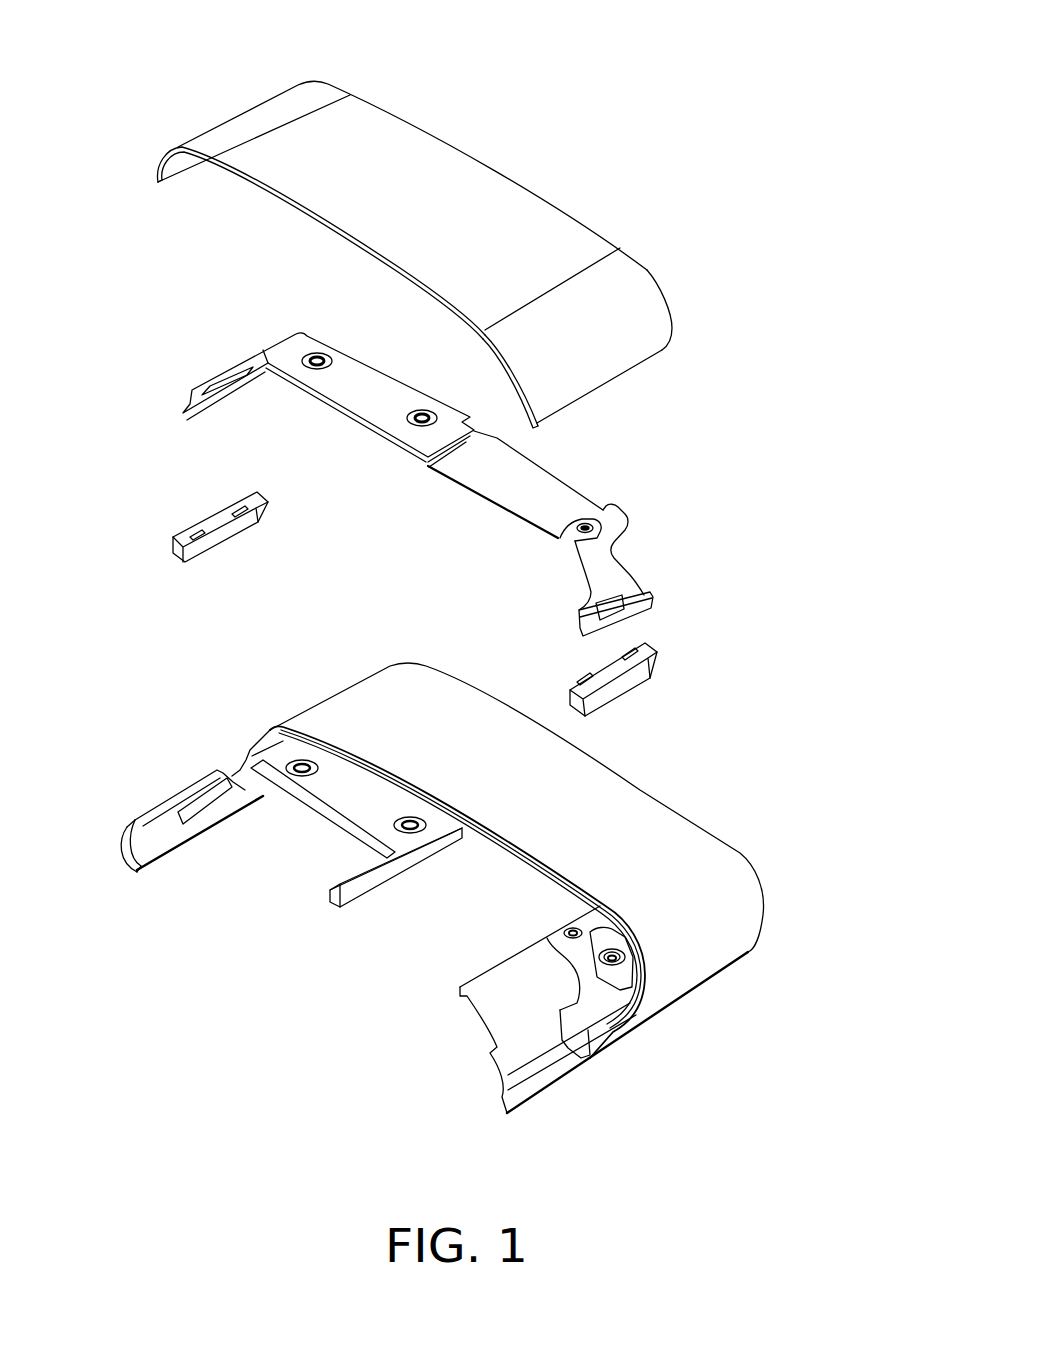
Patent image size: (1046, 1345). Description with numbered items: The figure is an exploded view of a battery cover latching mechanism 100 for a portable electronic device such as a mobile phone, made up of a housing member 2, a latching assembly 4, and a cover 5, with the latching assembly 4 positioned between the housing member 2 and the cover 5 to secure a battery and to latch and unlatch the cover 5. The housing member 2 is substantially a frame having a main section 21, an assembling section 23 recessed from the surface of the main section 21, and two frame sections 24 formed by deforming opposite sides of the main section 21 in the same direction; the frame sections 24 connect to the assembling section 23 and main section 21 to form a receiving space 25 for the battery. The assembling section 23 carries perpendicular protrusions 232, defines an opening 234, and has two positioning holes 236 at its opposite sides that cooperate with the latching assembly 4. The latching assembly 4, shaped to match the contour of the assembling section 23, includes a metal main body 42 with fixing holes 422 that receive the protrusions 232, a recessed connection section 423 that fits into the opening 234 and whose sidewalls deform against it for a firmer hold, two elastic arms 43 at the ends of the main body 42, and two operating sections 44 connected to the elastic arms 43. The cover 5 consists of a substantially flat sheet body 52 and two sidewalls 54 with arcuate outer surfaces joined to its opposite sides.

The battery cover latching mechanism 100 is at (165, 74).
The housing member 2 is at (746, 807).
The main section 21 is at (613, 783).
The assembling section 23 is at (357, 805).
The protrusions 232 is at (297, 765).
The opening 234 is at (560, 895).
The positioning holes 236 is at (580, 1027).
The frame sections 24 is at (130, 850).
The receiving space 25 is at (205, 857).
The latching assembly 4 is at (762, 482).
The main body 42 is at (602, 483).
The fixing holes 422 is at (307, 353).
The connection section 423 is at (480, 473).
The elastic arms 43 is at (615, 567).
The operating sections 44 is at (648, 647).
The cover 5 is at (770, 168).
The sheet body 52 is at (547, 230).
The sidewalls 54 is at (627, 295).